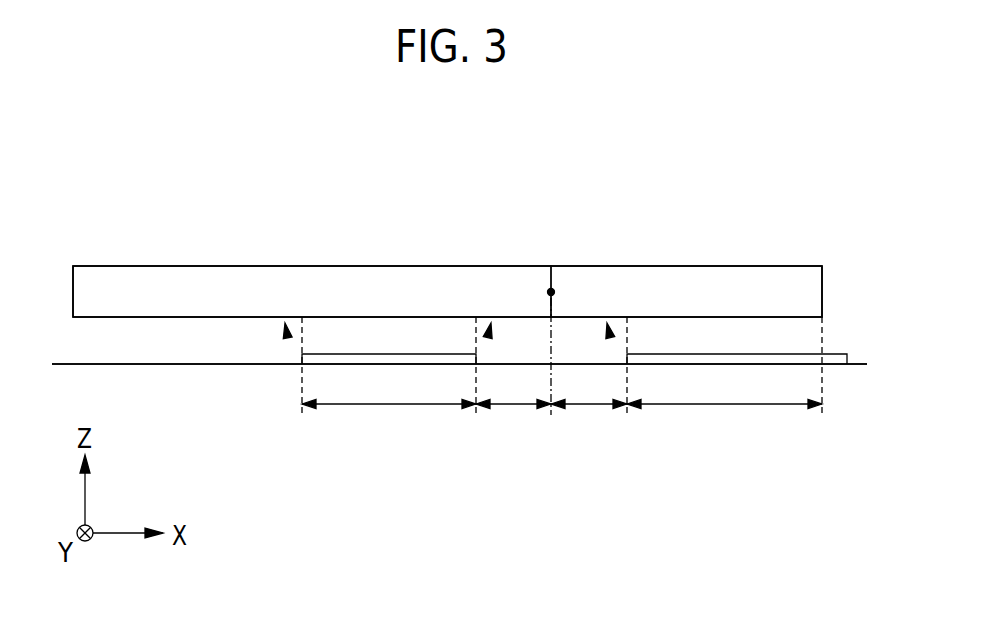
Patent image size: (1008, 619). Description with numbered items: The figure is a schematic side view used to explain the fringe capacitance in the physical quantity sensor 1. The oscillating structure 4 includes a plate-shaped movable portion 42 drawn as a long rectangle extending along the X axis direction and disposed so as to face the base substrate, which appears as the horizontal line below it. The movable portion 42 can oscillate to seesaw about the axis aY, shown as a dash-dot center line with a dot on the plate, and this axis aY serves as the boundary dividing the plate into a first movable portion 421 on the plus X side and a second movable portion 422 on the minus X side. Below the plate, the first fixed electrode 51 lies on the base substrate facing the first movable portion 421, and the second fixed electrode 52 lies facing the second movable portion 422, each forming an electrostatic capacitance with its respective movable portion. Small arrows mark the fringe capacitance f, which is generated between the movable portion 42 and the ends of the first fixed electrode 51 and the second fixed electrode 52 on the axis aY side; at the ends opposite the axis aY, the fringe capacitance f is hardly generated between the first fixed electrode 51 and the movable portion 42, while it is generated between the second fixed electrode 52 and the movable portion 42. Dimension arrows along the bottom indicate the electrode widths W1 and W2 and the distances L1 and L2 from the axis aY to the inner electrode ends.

The vibration element / physical quantity sensor 1 is at (714, 153).
The oscillating structure 4 is at (484, 254).
The movable portion 42 is at (447, 252).
The first movable portion 421 is at (749, 283).
The second movable portion 422 is at (283, 283).
The first fixed electrode 51 is at (682, 362).
The second fixed electrode 52 is at (379, 363).
The axis aY is at (552, 285).
The fringe capacitance f is at (288, 337).
The width W1 is at (723, 423).
The width W2 is at (388, 423).
The length L1 is at (588, 423).
The length L2 is at (514, 423).